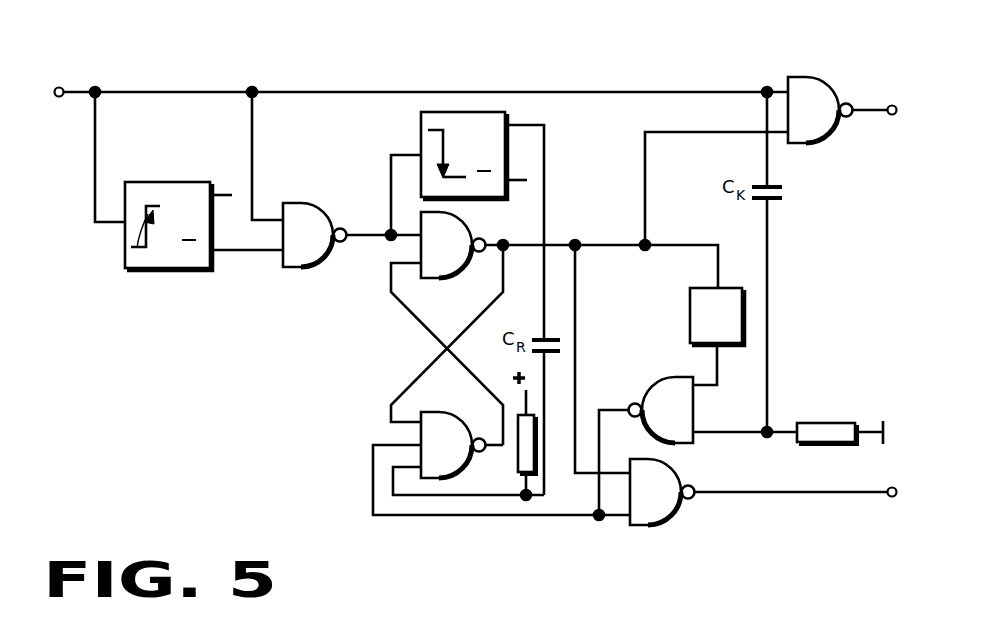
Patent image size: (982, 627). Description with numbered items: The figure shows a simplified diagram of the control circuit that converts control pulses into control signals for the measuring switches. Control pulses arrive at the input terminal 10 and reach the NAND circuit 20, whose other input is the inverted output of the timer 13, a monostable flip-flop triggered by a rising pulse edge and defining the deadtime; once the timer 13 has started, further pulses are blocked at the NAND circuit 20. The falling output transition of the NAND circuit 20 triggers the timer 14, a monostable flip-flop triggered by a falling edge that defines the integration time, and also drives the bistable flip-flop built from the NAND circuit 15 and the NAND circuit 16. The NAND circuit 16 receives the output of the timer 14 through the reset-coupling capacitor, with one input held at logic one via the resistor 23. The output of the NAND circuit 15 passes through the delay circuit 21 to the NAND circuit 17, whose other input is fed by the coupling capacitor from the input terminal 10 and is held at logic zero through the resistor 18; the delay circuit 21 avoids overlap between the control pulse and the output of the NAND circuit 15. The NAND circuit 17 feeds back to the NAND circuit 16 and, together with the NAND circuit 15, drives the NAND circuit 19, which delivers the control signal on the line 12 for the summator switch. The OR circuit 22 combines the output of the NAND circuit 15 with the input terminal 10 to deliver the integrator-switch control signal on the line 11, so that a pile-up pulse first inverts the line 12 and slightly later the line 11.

The input terminal 10 is at (74, 89).
The line 11 is at (862, 106).
The line 12 is at (762, 495).
The timer 13 is at (176, 234).
The timer 14 is at (475, 163).
The NAND circuit 15 is at (447, 254).
The NAND circuit 16 is at (447, 454).
The NAND circuit 17 is at (676, 419).
The resistor 18 is at (825, 424).
The NAND circuit 19 is at (656, 501).
The NAND circuit 20 is at (308, 244).
The delay circuit 21 is at (713, 339).
The OR circuit 22 is at (814, 119).
The resistor 23 is at (517, 460).